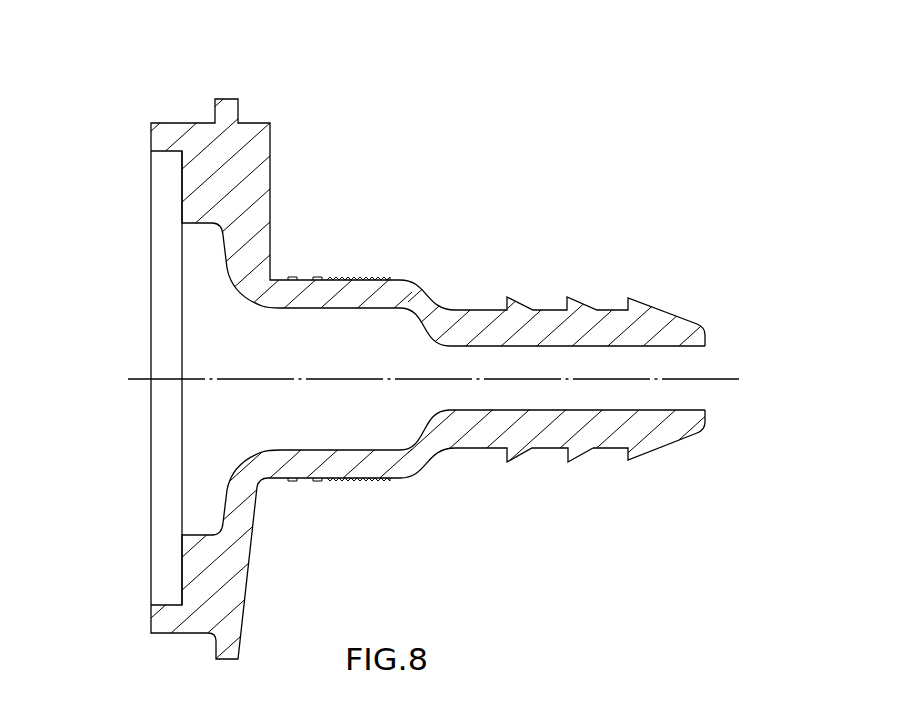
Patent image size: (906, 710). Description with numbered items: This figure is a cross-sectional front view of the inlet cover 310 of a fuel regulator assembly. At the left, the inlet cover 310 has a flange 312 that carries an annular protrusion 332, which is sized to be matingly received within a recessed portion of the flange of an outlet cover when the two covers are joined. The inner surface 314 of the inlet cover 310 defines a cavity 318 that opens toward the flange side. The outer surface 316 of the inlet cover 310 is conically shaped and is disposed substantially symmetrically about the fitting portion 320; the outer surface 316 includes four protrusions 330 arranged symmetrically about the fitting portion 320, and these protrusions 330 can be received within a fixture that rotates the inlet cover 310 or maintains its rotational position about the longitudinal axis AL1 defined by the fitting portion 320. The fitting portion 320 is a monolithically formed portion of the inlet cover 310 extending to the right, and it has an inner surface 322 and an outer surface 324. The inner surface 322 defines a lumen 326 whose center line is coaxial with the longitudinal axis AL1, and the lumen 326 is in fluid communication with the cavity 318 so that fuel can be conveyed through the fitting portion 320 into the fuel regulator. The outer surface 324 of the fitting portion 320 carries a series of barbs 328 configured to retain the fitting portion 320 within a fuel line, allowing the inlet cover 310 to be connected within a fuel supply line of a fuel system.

The inlet cover 310 is at (507, 132).
The flange 312 is at (203, 140).
The inner surface 314 is at (225, 492).
The outer surface 316 is at (423, 288).
The cavity 318 is at (225, 345).
The fitting portion 320 is at (535, 437).
The inner surface 322 is at (673, 407).
The outer surface 324 is at (613, 450).
The lumen 326 is at (690, 360).
The barbs 328 is at (512, 297).
The protrusions 330 is at (265, 187).
The annular protrusion 332 is at (158, 138).
The longitudinal axis AL1 is at (207, 382).